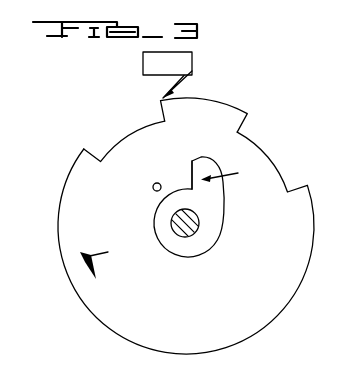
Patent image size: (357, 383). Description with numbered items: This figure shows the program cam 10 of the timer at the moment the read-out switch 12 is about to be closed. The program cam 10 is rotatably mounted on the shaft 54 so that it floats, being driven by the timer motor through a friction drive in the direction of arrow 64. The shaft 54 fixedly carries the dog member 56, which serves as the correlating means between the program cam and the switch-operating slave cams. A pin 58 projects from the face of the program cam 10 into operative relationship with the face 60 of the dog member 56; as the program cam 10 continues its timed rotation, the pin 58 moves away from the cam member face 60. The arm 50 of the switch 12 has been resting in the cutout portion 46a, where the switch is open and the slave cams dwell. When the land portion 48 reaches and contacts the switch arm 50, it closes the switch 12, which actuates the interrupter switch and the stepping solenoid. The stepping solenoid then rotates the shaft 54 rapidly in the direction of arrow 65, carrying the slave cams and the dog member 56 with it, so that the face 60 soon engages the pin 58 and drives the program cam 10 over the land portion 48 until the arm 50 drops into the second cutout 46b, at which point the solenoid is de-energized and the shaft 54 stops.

The program cam 10 is at (255, 315).
The read-out switch 12 is at (192, 61).
The cutout portion 46a is at (120, 141).
The second cutout 46b is at (264, 149).
The land portion 48 is at (229, 102).
The arm 50 is at (178, 93).
The shaft 54 is at (179, 234).
The dog member 56 is at (216, 218).
The pin 58 is at (152, 187).
The face 60 is at (195, 168).
The arrow 64 is at (107, 259).
The arrow 65 is at (232, 171).